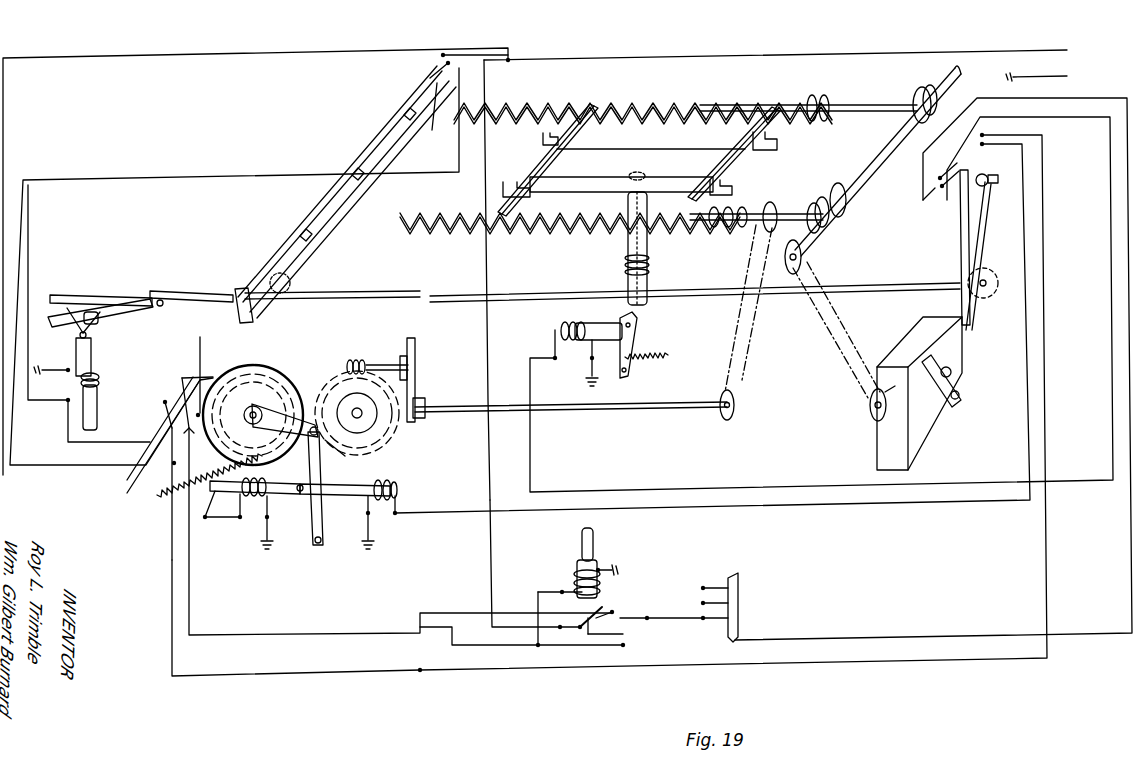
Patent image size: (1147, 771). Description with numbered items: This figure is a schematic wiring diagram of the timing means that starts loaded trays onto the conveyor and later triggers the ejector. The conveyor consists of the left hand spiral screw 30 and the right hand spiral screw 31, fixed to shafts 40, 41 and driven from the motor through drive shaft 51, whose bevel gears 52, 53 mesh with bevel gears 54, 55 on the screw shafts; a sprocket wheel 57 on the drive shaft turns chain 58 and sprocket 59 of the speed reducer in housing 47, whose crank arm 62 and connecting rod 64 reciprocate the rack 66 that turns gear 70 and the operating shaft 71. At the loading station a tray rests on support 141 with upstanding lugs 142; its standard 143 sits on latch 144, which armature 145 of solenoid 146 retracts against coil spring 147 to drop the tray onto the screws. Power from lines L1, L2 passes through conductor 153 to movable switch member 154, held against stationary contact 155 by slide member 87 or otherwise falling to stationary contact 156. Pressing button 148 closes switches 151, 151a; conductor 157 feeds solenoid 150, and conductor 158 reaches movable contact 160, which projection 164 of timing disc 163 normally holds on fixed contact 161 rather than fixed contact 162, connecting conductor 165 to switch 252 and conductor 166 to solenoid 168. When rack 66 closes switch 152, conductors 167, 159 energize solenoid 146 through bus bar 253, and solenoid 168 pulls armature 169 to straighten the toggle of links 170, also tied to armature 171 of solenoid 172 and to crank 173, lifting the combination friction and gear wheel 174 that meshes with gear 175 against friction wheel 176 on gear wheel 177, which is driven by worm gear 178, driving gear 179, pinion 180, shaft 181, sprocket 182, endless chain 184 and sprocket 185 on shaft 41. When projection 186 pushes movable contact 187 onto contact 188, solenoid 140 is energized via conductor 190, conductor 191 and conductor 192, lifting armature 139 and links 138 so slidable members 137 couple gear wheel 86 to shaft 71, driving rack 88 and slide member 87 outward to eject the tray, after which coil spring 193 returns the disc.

The conductor 191 is at (3, 143).
The conductor 192 is at (178, 178).
The conductor 153 is at (603, 57).
The conductor 157 is at (490, 560).
The power line L1 is at (1030, 51).
The power line L2 is at (1040, 76).
The conductor 159 is at (1129, 353).
The conductor 167 is at (1111, 405).
The conductor 166 is at (1026, 267).
The conductor 165 is at (1045, 295).
The coil spring 193 is at (167, 533).
The conductor 158 is at (330, 632).
The switch 252 is at (985, 148).
The switch 152 is at (945, 192).
The shaft 40 is at (838, 102).
The bevel gear 54 is at (918, 95).
The drive shaft 51 is at (885, 153).
The bevel gear 52 is at (935, 97).
The bevel gear 53 is at (840, 178).
The bevel gear 55 is at (814, 190).
The sprocket 185 is at (766, 202).
The shaft 41 is at (745, 224).
The sprocket wheel 57 is at (808, 257).
The chain 58 is at (808, 330).
The sprocket 59 is at (870, 425).
The sprocket 182 is at (722, 428).
The endless chain 184 is at (762, 392).
The shaft 181 is at (626, 412).
The operating shaft 71 is at (86, 290).
The support 141 is at (603, 163).
The upstanding lugs 142 is at (778, 142).
The spiral screw 30 is at (668, 102).
The spiral screw 31 is at (546, 243).
The standard 143 is at (655, 304).
The coil spring 147 is at (625, 263).
The latch 144 is at (640, 323).
The armature 145 is at (602, 330).
The solenoid 146 is at (560, 332).
The slide member 87 is at (400, 115).
The rack 88 is at (318, 237).
The gear wheel 86 is at (290, 280).
The stationary contact 155 is at (438, 57).
The movable switch member 154 is at (432, 70).
The stationary contact 156 is at (437, 95).
The slidable member 137 is at (206, 292).
The links 138 is at (134, 298).
The solenoid 140 is at (98, 380).
The armature 139 is at (98, 420).
The conductor 190 is at (66, 428).
The fixed contact 161 is at (127, 480).
The fixed contact 162 is at (127, 493).
The movable contact 187 is at (160, 400).
The contact 188 is at (182, 378).
The movable contact 160 is at (157, 500).
The projection 164 is at (199, 337).
The timing disc 163 is at (240, 375).
The projection 186 is at (264, 370).
The gear 175 is at (292, 360).
The crank 173 is at (345, 368).
The worm gear 178 is at (360, 360).
The driving gear 179 is at (417, 350).
The gear wheel 177 is at (380, 396).
The friction wheel 176 is at (372, 419).
The pinion 180 is at (426, 404).
The combination friction and gear wheel 174 is at (343, 452).
The links 170 is at (313, 522).
The armature 171 is at (222, 497).
The solenoid 172 is at (250, 500).
The armature 169 is at (353, 498).
The solenoid 168 is at (392, 478).
The rack 66 is at (961, 229).
The connecting rod 64 is at (990, 196).
The gear 70 is at (990, 268).
The crank arm 62 is at (951, 392).
The housing 47 is at (880, 450).
The button 148 is at (595, 553).
The solenoid 150 is at (600, 589).
The switch 151a is at (607, 622).
The switch 151 is at (605, 638).
The bus bar 253 is at (740, 601).